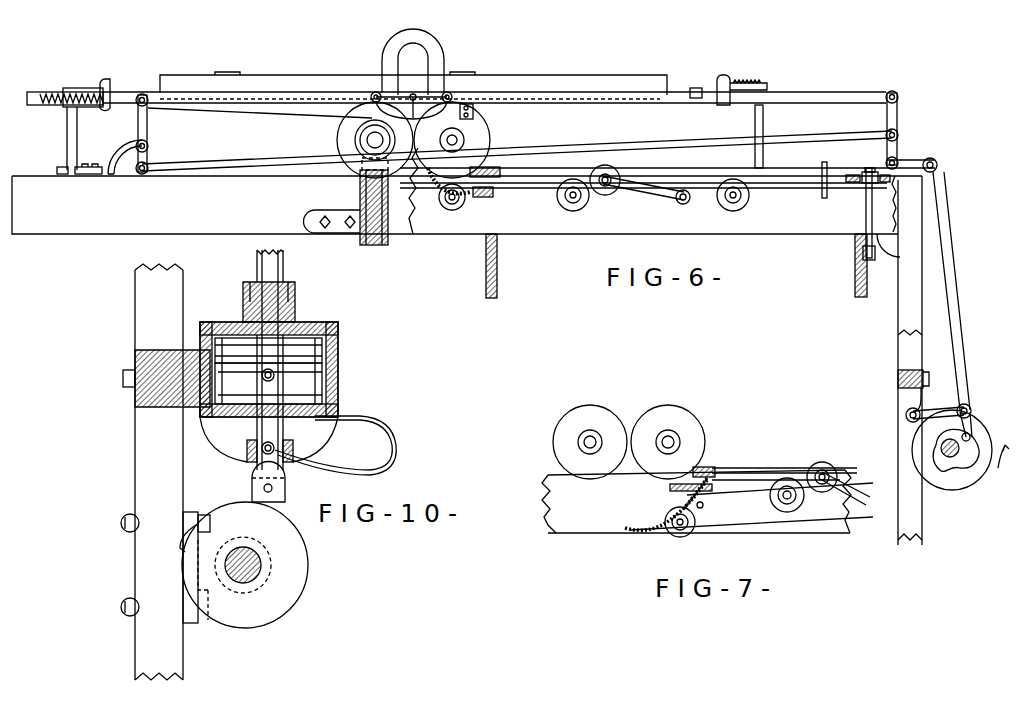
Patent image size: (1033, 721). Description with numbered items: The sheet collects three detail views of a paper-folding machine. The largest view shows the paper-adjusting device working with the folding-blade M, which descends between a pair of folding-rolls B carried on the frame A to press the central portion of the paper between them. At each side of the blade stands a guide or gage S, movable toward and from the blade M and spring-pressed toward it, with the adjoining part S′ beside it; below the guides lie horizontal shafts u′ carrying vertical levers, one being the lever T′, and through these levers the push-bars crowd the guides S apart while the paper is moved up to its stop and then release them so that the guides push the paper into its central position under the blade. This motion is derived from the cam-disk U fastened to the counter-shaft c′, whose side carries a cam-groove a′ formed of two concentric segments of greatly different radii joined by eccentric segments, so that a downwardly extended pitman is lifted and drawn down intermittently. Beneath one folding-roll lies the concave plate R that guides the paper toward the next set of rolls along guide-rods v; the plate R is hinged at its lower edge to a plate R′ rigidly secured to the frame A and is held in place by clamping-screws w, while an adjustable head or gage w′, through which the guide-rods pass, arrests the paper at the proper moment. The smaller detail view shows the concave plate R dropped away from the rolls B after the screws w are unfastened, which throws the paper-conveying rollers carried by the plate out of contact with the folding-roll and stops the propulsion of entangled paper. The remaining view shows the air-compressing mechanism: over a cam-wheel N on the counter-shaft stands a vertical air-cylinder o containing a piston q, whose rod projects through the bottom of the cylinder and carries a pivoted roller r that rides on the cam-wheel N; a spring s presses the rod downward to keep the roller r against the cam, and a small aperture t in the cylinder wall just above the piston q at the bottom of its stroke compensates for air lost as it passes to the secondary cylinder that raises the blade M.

In FIG. 6, the frame A is at (470, 360).
In FIG. 7, the frame A is at (707, 501).
In FIG. 10, the frame A is at (165, 472).
In FIG. 6, the rollers B is at (413, 140).
In FIG. 7, the rollers B is at (629, 442).
In FIG. 6, the folding-blade M is at (413, 73).
In FIG. 10, the cam-wheel N is at (244, 565).
In FIG. 6, the concave plate R is at (361, 196).
In FIG. 7, the concave plate R is at (666, 505).
In FIG. 6, the plate R′ is at (467, 185).
In FIG. 7, the plate R′ is at (670, 488).
In FIG. 6, the guides or gages S is at (722, 78).
In FIG. 6, the latch post S′ is at (142, 90).
In FIG. 6, the lever T′ is at (137, 126).
In FIG. 6, the cam-disk U is at (961, 450).
In FIG. 6, the cam-groove a′ is at (970, 458).
In FIG. 6, the counter-shaft c′ is at (946, 447).
In FIG. 10, the air-cylinder o is at (268, 412).
In FIG. 10, the piston q is at (268, 350).
In FIG. 10, the roller r is at (252, 502).
In FIG. 10, the spring s is at (337, 445).
In FIG. 10, the aperture t is at (338, 385).
In FIG. 6, the horizontal shafts u′ is at (148, 147).
In FIG. 7, the horizontal shafts u′ is at (681, 494).
In FIG. 6, the guide-rods v is at (643, 178).
In FIG. 7, the guide-rods v is at (784, 478).
In FIG. 7, the clamping-screws w is at (711, 510).
In FIG. 6, the adjustable head or gage w′ is at (822, 168).